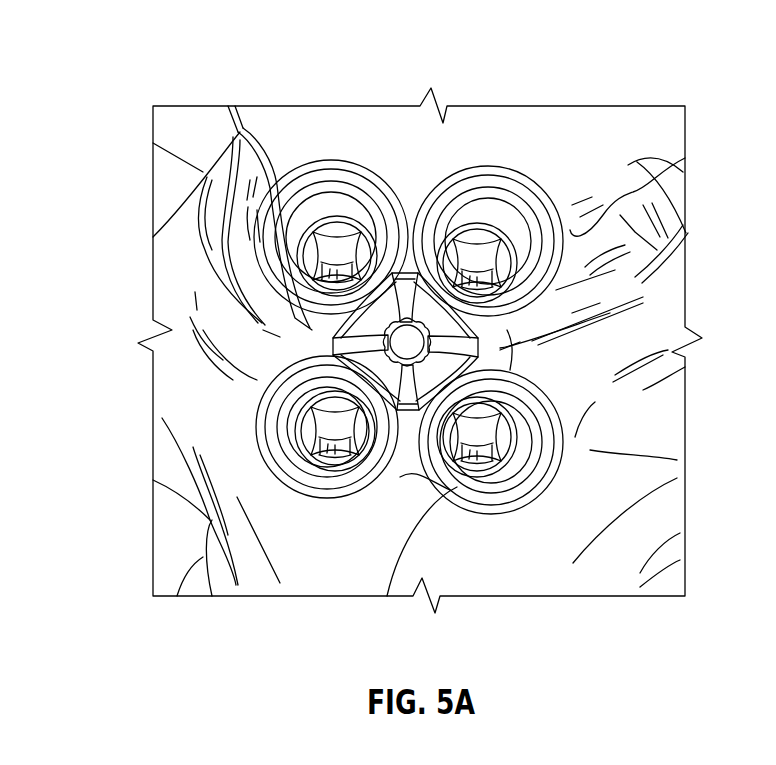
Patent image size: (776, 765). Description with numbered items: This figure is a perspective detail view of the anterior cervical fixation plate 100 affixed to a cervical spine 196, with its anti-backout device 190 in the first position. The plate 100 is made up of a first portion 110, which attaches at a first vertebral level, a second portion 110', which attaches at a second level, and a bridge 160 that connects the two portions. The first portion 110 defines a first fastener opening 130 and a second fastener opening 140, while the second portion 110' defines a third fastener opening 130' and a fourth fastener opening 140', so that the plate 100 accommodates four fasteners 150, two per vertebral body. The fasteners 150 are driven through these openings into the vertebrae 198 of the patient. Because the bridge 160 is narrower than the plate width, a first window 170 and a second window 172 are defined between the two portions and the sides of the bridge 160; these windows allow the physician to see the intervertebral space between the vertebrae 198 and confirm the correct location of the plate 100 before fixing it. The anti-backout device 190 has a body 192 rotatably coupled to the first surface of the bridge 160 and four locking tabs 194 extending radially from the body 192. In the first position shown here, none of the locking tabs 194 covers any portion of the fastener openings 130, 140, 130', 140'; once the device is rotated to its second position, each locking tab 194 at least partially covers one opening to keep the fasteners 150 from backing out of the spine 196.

The anterior cervical fixation plate 100 is at (495, 161).
The first portion 110 is at (515, 181).
The second portion 110' is at (513, 507).
The first fastener opening 130 is at (500, 178).
The third fastener opening 130' is at (489, 516).
The second fastener opening 140 is at (331, 184).
The fourth fastener opening 140' is at (327, 505).
The fastener 150 is at (458, 180).
The bridge 160 is at (533, 340).
The first window 170 is at (562, 320).
The second window 172 is at (293, 321).
The anti-backout device 190 is at (548, 349).
The body 192 is at (570, 290).
The locking tab 194 is at (418, 176).
The cervical spine 196 is at (628, 106).
The vertebrae 198 is at (685, 332).